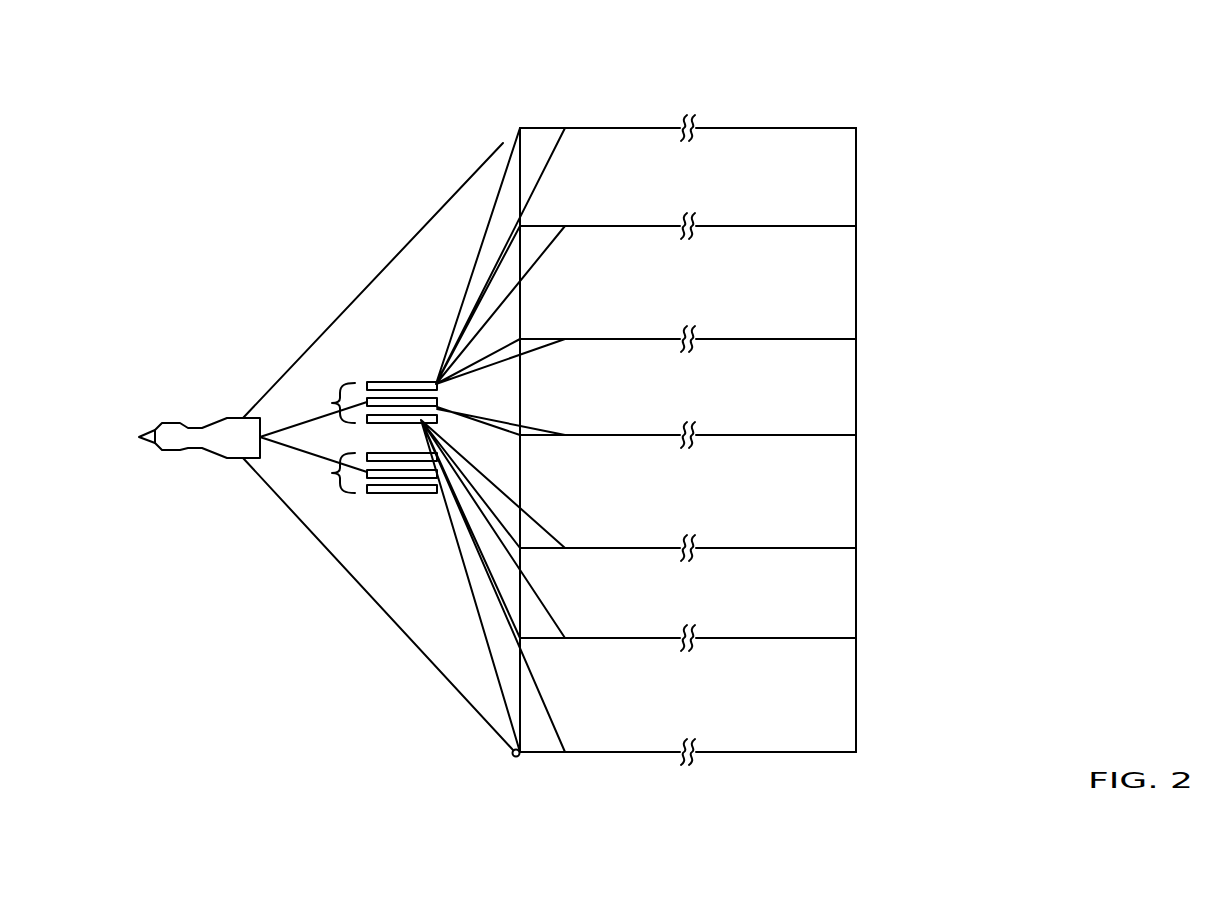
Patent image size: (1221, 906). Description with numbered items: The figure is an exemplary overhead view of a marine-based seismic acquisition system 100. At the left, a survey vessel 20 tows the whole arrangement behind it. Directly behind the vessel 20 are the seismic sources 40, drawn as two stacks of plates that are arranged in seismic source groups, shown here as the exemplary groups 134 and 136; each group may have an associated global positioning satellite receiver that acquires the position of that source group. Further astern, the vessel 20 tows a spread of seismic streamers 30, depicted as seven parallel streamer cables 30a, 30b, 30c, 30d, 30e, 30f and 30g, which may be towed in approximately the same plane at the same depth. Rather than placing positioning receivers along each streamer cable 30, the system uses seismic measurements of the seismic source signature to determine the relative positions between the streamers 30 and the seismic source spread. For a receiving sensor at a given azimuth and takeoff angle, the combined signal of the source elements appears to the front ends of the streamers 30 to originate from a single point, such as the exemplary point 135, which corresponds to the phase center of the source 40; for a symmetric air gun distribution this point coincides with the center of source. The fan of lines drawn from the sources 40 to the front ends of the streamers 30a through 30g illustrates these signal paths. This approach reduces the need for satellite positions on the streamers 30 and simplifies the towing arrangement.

The marine-based seismic acquisition system 100 is at (1092, 77).
The survey vessel 20 is at (211, 425).
The seismic source group 134 is at (332, 403).
The seismic source group 136 is at (332, 473).
The point 135 is at (410, 400).
The seismic source 40 is at (395, 382).
The seismic streamer 30 is at (822, 128).
The seismic streamer 30a is at (600, 128).
The seismic streamer 30b is at (830, 226).
The seismic streamer 30c is at (830, 339).
The seismic streamer 30d is at (830, 435).
The seismic streamer 30e is at (830, 548).
The seismic streamer 30f is at (830, 638).
The seismic streamer 30g is at (830, 752).